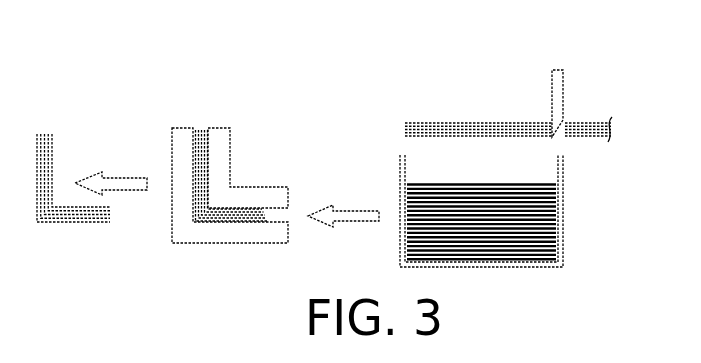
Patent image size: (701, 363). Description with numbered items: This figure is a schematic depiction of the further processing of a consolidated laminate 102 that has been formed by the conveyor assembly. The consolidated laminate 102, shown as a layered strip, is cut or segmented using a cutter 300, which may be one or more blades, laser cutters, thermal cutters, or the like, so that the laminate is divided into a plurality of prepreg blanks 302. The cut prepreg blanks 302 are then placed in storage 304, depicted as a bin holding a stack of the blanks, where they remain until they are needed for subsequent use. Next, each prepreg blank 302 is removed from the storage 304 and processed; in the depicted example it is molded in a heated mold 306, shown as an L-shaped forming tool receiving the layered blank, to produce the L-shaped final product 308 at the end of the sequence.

The consolidated laminate 102 is at (585, 124).
The cutter 300 is at (557, 75).
The prepreg blanks 302 is at (457, 127).
The storage 304 is at (563, 172).
The heated mold 306 is at (220, 125).
The final product 308 is at (43, 133).